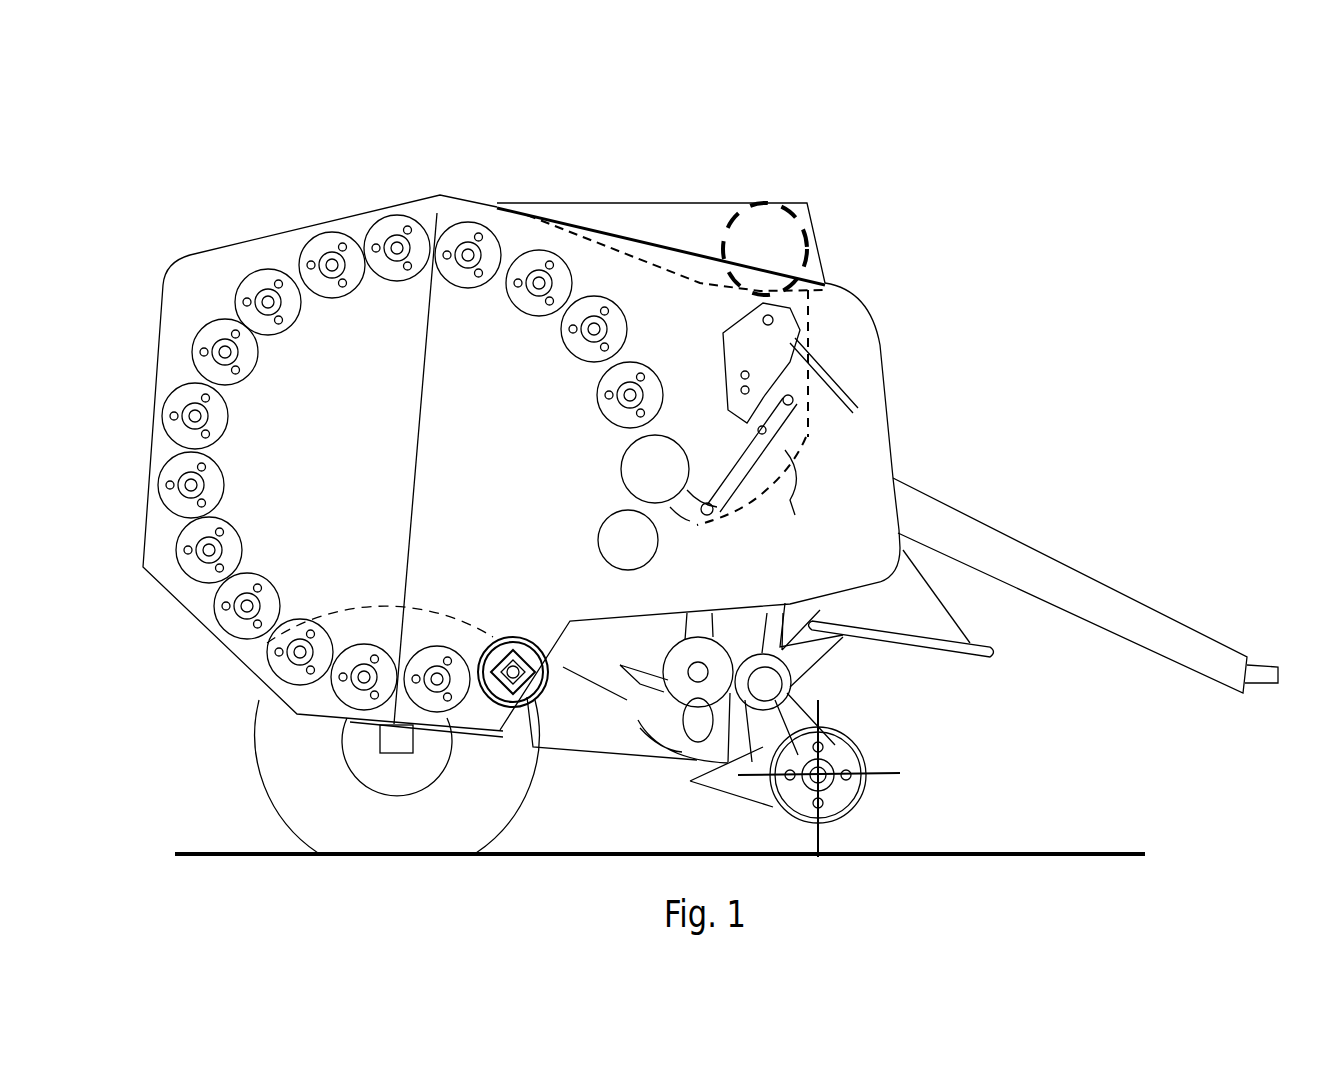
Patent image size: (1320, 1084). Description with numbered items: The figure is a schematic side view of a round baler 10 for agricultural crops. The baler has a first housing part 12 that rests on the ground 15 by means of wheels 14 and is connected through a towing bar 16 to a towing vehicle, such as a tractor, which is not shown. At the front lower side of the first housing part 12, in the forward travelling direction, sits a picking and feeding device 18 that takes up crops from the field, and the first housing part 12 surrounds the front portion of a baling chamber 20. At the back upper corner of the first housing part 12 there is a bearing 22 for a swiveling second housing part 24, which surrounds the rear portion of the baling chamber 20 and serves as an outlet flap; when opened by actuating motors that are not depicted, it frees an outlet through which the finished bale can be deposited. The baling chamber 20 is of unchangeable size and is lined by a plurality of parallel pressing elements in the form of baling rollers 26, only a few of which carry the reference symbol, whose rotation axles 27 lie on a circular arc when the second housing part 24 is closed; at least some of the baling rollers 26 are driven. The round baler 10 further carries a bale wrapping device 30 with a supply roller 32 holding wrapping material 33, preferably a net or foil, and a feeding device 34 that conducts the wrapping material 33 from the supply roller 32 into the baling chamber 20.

The round baler 10 is at (828, 193).
The first housing part 12 is at (493, 497).
The wheels 14 is at (420, 817).
The ground 15 is at (230, 852).
The towing bar 16 is at (1057, 578).
The picking and feeding device 18 is at (933, 773).
The baling chamber 20 is at (443, 497).
The bearing 22 is at (435, 205).
The second housing part 24 is at (367, 393).
The baling rollers 26 is at (632, 380).
The rotation axles 27 is at (542, 280).
The bale wrapping device 30 is at (843, 373).
The supply roller 32 is at (742, 232).
The wrapping material 33 is at (807, 332).
The feeding device 34 is at (757, 447).